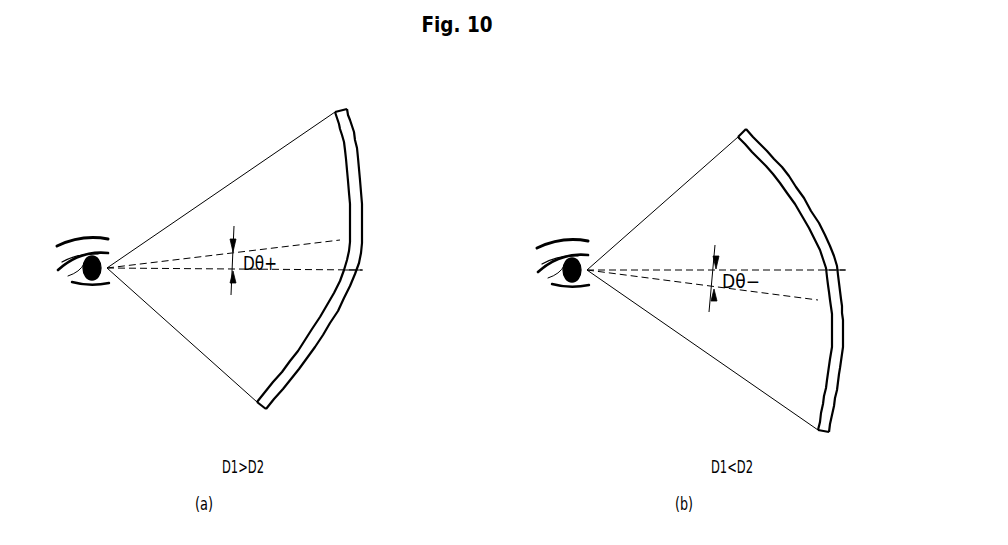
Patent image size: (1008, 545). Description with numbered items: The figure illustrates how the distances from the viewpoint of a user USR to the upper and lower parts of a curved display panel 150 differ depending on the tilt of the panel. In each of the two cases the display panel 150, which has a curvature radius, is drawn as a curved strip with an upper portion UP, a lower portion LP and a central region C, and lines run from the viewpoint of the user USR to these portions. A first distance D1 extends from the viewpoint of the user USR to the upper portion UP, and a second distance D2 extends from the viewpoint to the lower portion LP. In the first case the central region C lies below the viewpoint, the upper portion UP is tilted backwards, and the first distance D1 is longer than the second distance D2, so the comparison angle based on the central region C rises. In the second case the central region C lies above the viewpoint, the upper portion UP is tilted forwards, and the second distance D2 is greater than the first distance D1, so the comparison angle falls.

The display panel 150 is at (339, 110).
The user USR is at (80, 290).
The upper portion of the display panel UP is at (557, 119).
The lower portion of the display panel LP is at (559, 419).
The central region of the display panel C is at (603, 269).
The first distance D1 is at (422, 191).
The second distance D2 is at (462, 349).